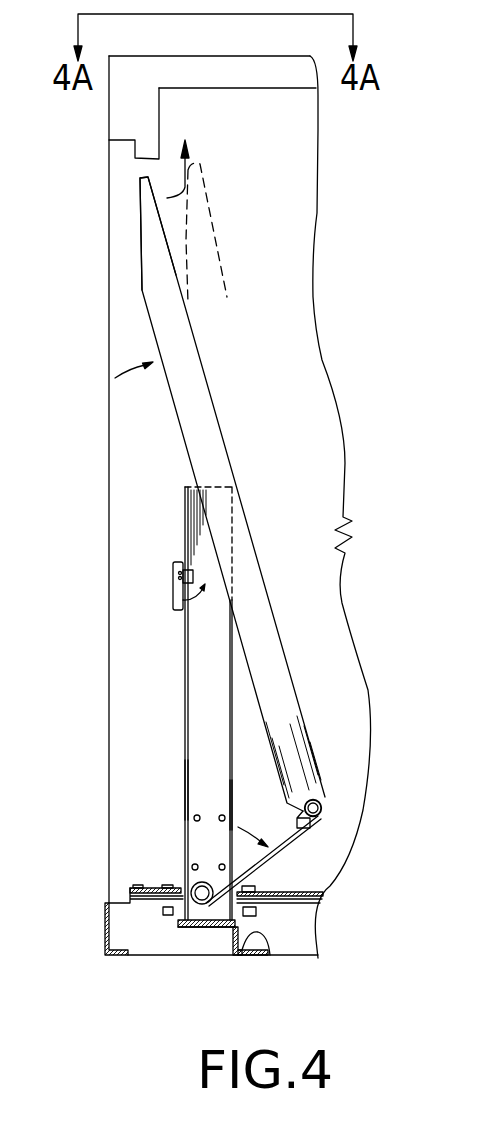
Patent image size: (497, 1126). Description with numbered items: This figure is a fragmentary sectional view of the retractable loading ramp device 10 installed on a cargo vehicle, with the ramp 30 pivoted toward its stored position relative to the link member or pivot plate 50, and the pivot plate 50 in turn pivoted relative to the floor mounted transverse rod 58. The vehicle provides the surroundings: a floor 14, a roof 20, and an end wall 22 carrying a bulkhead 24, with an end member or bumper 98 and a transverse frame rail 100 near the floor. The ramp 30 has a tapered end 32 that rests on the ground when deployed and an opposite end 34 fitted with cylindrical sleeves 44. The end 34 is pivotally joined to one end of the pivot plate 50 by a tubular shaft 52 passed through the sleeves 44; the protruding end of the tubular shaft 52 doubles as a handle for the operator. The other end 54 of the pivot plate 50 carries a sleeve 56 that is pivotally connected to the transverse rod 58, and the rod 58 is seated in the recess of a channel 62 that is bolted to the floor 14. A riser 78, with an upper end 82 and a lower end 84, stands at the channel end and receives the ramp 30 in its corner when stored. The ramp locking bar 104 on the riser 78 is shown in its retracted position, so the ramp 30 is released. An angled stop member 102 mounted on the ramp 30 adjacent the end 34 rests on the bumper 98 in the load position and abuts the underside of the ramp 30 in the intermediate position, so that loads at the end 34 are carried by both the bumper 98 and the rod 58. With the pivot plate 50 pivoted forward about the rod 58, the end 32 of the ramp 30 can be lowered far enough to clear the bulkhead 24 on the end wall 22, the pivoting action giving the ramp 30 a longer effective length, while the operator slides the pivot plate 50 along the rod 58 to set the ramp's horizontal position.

The retractable loading ramp device 10 is at (205, 486).
The floor 14 is at (325, 887).
The roof 20 is at (188, 55).
The end wall 22 is at (110, 93).
The bulkhead 24 is at (147, 160).
The ramp 30 is at (195, 475).
The end of ramp 32 is at (143, 207).
The end of ramp 34 is at (313, 808).
The cylindrical sleeves 44 is at (323, 800).
The link member or pivot plate 50 is at (289, 840).
The tubular shaft 52 is at (322, 815).
The end of link plate 54 is at (218, 927).
The sleeve 56 is at (192, 885).
The transverse rod 58 is at (190, 886).
The channel 62 is at (186, 928).
The riser 78 is at (165, 703).
The upper end of riser 82 is at (183, 498).
The lower end of riser 84 is at (187, 790).
The end member or bumper 98 is at (105, 942).
The transverse frame rail 100 is at (265, 940).
The angled stop member 102 is at (295, 828).
The ramp locking bar 104 is at (168, 581).